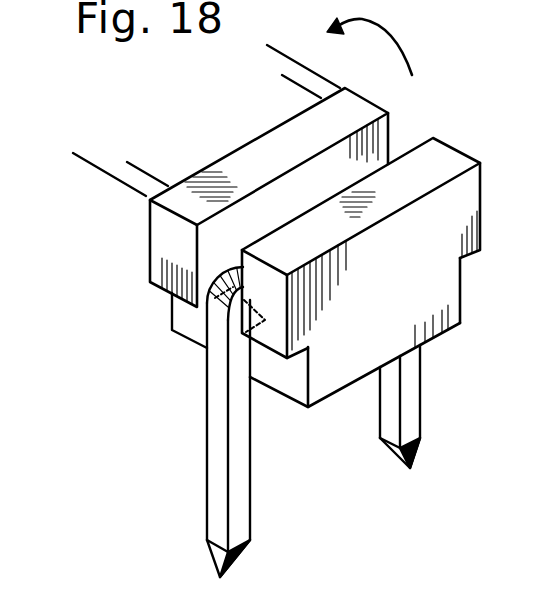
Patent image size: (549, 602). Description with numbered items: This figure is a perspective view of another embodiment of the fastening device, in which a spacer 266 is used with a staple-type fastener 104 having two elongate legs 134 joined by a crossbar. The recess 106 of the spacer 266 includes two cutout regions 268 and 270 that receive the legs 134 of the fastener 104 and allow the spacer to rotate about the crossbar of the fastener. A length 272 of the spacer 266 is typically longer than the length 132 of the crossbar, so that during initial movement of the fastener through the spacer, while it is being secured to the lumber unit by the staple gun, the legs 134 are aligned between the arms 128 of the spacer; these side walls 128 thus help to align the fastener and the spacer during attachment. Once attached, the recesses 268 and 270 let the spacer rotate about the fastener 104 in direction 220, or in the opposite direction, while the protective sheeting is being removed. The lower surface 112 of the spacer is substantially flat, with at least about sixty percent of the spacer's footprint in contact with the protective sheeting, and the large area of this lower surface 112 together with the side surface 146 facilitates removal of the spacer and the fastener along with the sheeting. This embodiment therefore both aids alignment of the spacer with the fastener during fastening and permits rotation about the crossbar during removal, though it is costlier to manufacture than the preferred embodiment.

The recess 106 is at (382, 141).
The arms 128 is at (268, 286).
The lower surface 112 is at (188, 342).
The spacer 266 is at (453, 197).
The side surface 146 is at (453, 238).
The cutout region 270 is at (460, 302).
The cutout region 268 is at (283, 377).
The legs 134 is at (410, 402).
The fastener 104 is at (237, 530).
The direction 220 is at (383, 30).
The length 272 is at (275, 50).
The length 132 is at (299, 85).